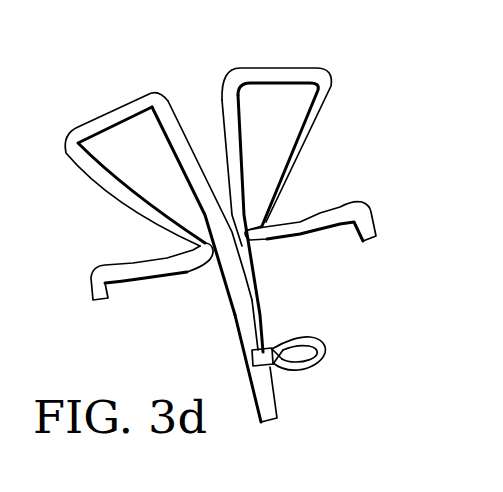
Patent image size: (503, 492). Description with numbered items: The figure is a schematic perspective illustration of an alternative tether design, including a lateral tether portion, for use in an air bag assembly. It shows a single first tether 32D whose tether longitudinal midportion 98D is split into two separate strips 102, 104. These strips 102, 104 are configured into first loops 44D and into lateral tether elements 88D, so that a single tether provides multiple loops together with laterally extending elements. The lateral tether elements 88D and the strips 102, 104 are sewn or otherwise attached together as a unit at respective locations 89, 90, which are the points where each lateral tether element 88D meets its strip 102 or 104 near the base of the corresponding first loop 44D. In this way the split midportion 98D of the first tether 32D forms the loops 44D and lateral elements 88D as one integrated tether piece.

The first loops 44D is at (121, 112).
The strip 102 is at (180, 145).
The strip 104 is at (227, 130).
The location 90 is at (267, 222).
The location 89 is at (196, 244).
The lateral tether elements 88D is at (160, 279).
The first tether 32D is at (250, 337).
The tether longitudinal midportion 98D is at (242, 321).